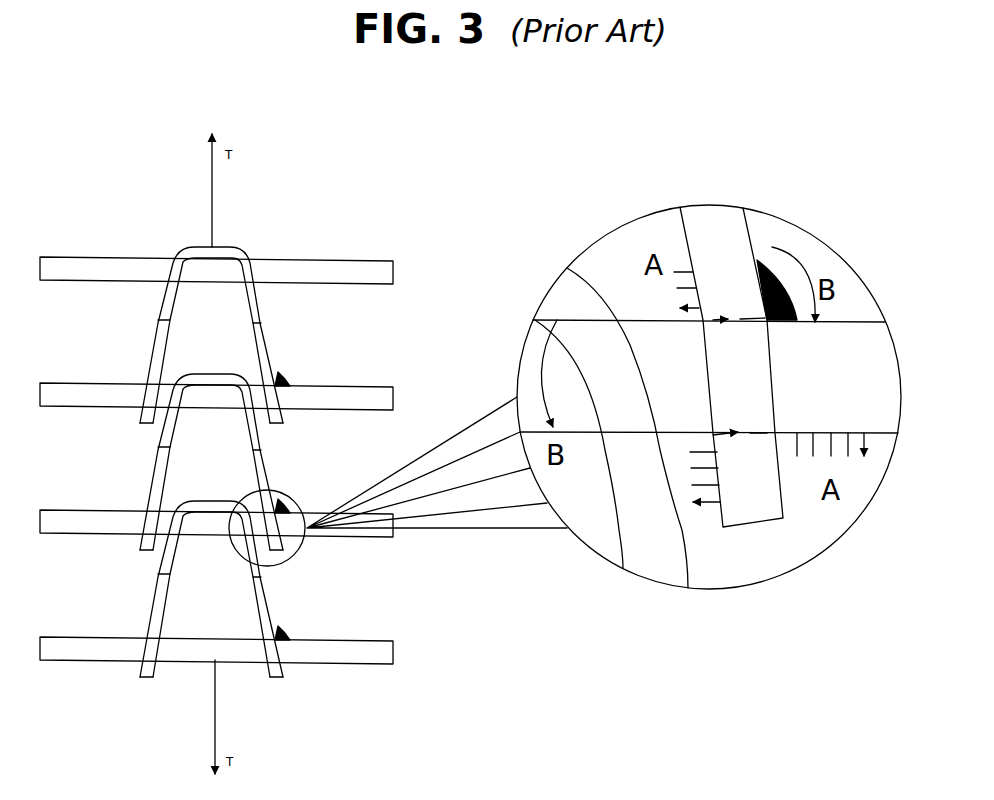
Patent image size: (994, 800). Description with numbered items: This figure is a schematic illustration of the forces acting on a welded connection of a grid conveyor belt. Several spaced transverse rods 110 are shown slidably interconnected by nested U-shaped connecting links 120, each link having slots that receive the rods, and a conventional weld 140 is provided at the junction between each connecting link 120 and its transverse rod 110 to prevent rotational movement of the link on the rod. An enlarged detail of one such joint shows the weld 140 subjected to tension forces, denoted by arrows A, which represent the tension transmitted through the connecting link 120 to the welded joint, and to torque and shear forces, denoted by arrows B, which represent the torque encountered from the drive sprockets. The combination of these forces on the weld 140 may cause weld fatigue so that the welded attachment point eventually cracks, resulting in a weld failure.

The transverse rod 110 is at (310, 268).
The U-shaped connecting link 120 is at (258, 308).
The weld 140 is at (287, 383).